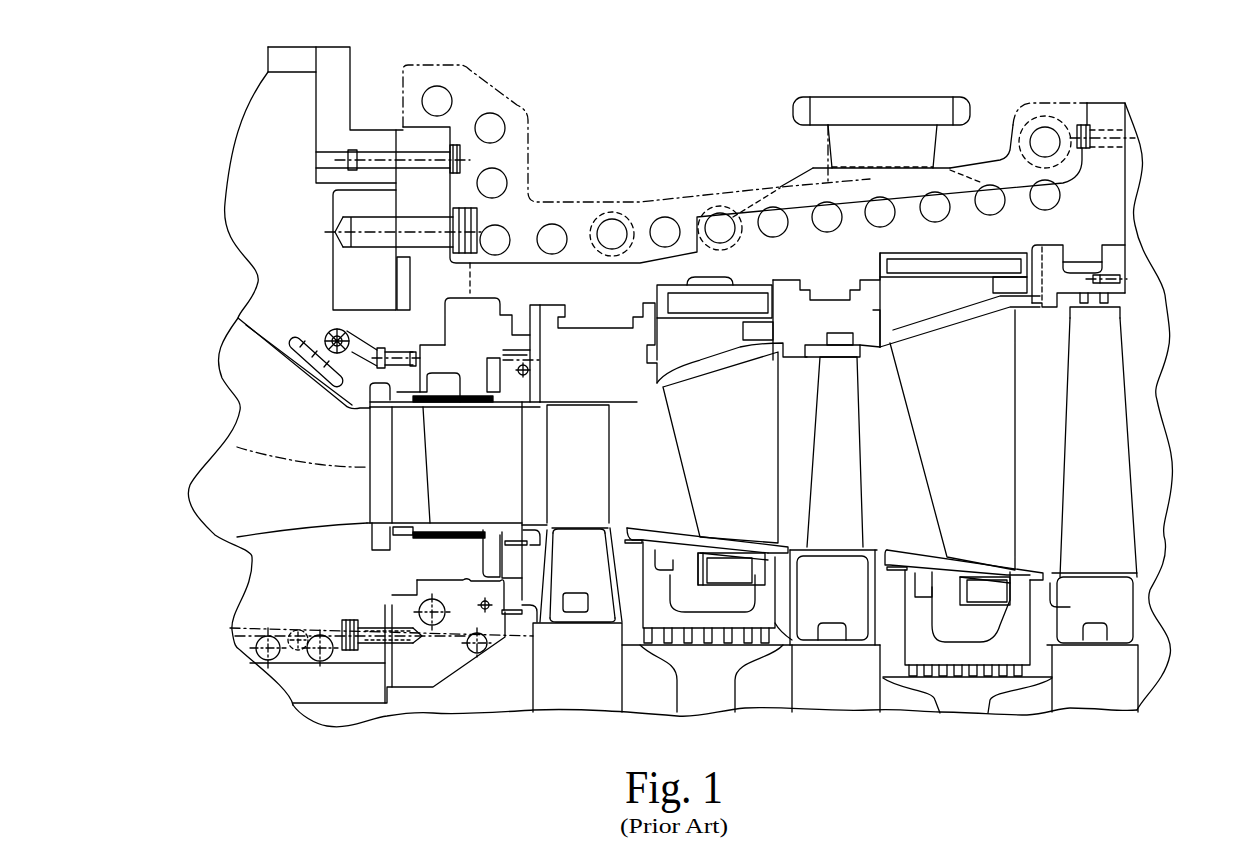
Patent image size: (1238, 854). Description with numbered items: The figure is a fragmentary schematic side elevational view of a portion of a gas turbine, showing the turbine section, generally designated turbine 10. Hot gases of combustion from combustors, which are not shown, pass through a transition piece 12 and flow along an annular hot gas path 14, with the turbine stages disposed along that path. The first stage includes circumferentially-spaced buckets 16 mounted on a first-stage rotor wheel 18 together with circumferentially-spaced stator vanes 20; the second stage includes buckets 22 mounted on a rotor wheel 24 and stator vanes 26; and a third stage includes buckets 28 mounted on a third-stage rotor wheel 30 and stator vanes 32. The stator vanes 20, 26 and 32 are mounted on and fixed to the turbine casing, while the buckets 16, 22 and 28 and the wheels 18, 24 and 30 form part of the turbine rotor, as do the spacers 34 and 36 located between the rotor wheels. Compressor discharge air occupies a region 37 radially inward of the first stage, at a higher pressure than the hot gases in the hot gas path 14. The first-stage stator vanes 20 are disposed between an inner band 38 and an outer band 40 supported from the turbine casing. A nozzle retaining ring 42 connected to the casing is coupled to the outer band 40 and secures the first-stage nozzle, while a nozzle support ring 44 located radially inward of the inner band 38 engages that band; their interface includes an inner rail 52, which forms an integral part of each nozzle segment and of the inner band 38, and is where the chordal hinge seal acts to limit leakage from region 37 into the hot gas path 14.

The turbine 10 is at (605, 133).
The transition piece 12 is at (252, 393).
The hot gas path 14 is at (634, 407).
The buckets 16 is at (598, 437).
The first-stage rotor wheel 18 is at (558, 690).
The stator vanes 20 is at (460, 441).
The buckets 22 is at (856, 443).
The rotor wheel 24 is at (837, 695).
The stator vanes 26 is at (738, 426).
The buckets 28 is at (1120, 437).
The third-stage rotor wheel 30 is at (1098, 702).
The stator vanes 32 is at (979, 421).
The spacer 34 is at (707, 697).
The spacer 36 is at (968, 703).
The region 37 is at (356, 595).
The inner band 38 is at (463, 533).
The outer band 40 is at (485, 407).
The nozzle retaining ring 42 is at (427, 354).
The nozzle support ring 44 is at (512, 570).
The inner rail 52 is at (487, 545).